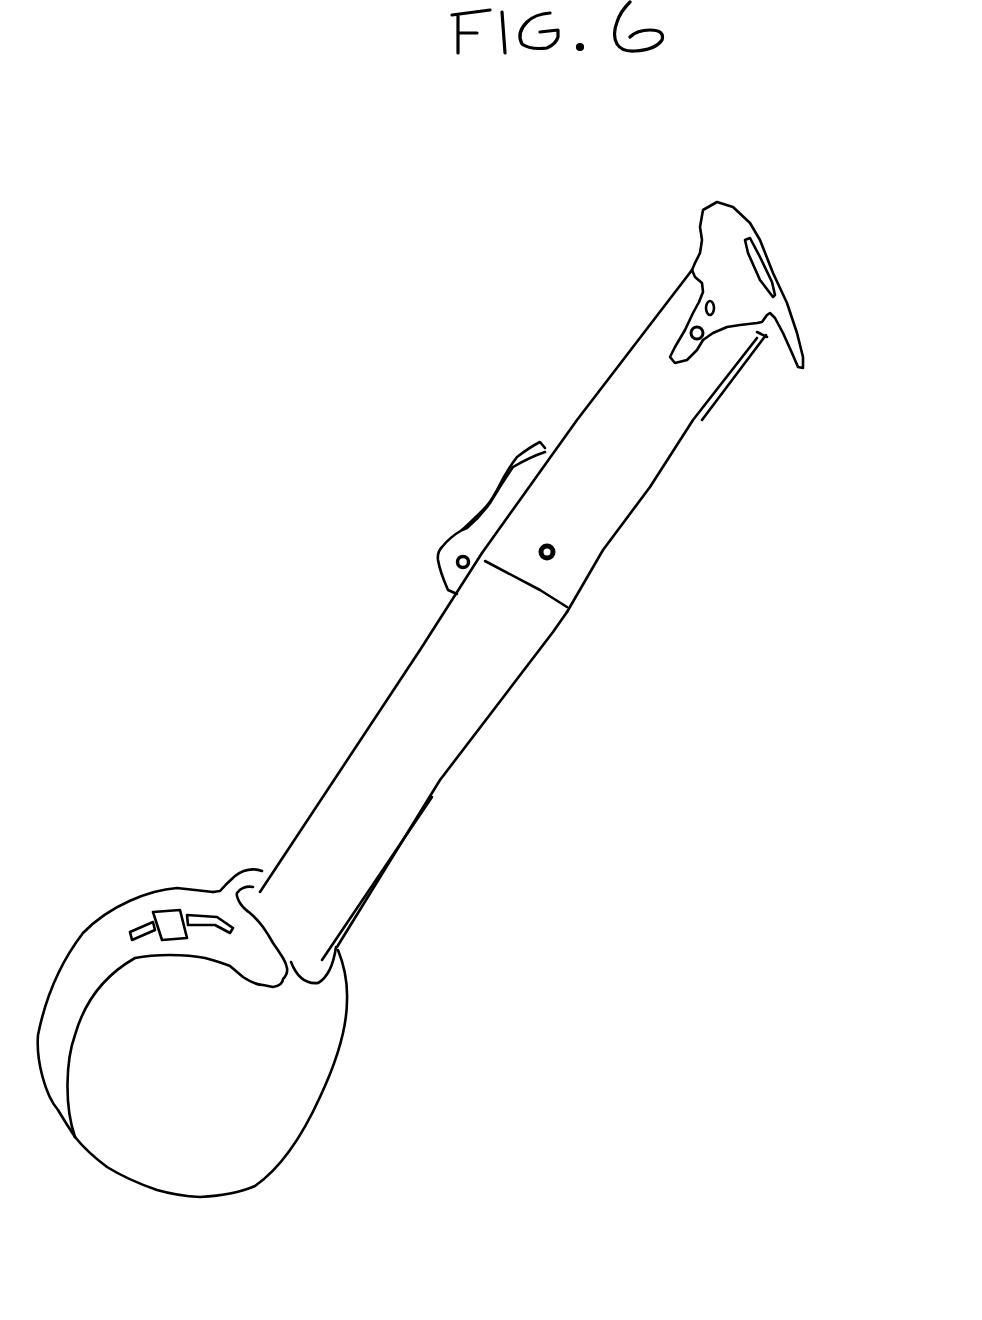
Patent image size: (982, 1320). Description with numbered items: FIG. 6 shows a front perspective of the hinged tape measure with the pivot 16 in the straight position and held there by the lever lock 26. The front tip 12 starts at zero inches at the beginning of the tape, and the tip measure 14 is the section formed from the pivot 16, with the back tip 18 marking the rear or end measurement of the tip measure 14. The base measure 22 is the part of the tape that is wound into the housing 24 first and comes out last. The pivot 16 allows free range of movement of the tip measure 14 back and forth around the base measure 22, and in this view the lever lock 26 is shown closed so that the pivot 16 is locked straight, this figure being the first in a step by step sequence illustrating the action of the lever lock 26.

The front tip 12 is at (875, 258).
The tip measure 14 is at (722, 402).
The pivot 16 is at (598, 582).
The back tip 18 is at (568, 615).
The base measure 22 is at (365, 927).
The housing 24 is at (322, 1117).
The lever lock 26 is at (468, 488).